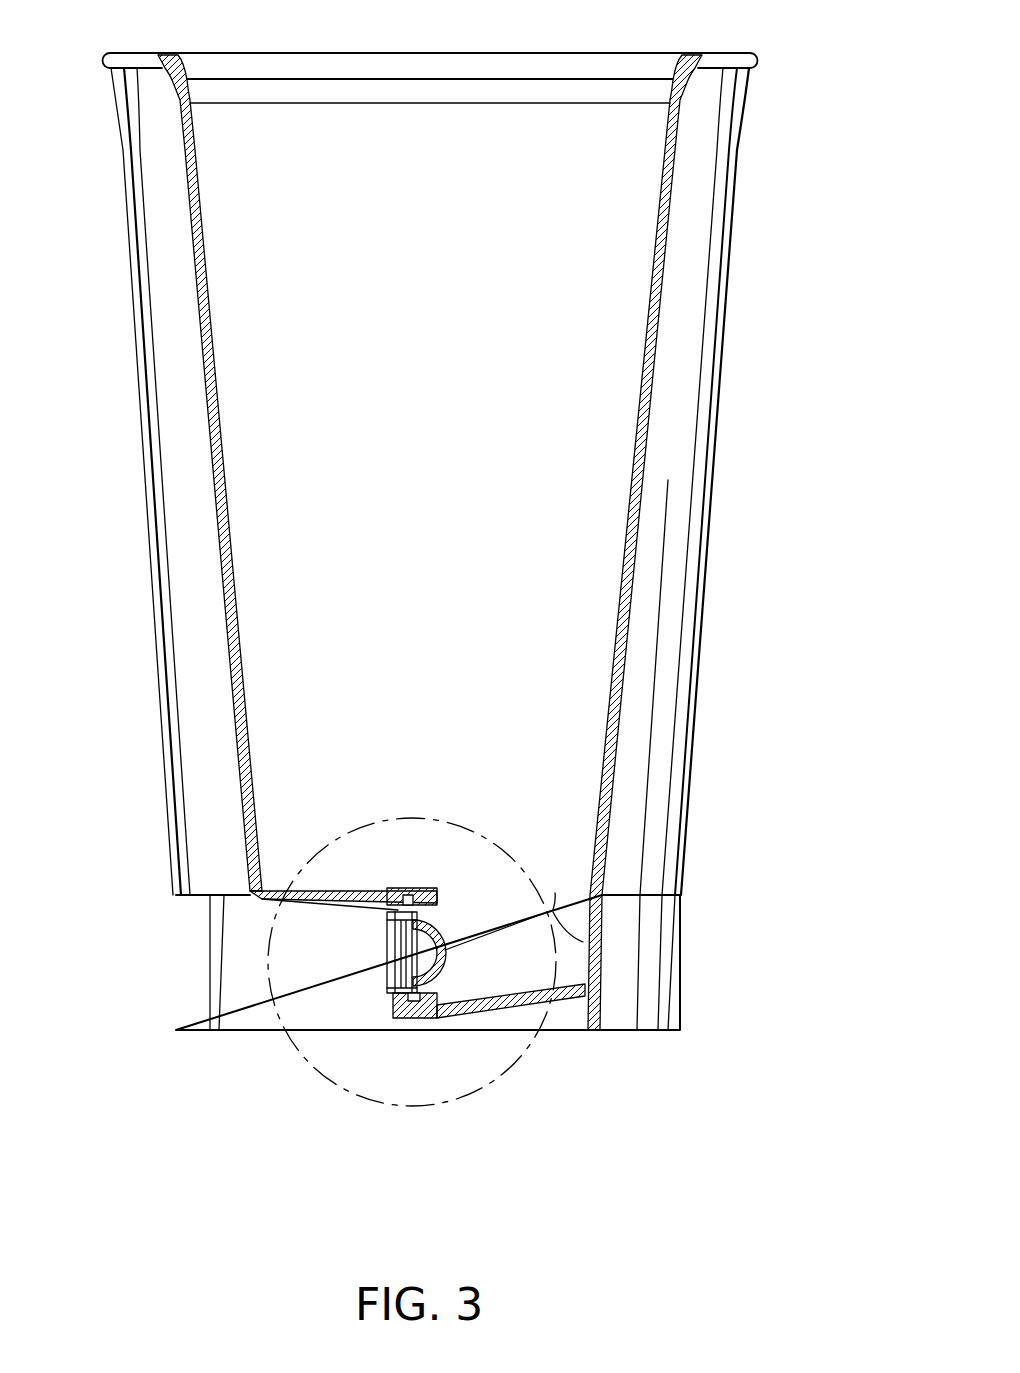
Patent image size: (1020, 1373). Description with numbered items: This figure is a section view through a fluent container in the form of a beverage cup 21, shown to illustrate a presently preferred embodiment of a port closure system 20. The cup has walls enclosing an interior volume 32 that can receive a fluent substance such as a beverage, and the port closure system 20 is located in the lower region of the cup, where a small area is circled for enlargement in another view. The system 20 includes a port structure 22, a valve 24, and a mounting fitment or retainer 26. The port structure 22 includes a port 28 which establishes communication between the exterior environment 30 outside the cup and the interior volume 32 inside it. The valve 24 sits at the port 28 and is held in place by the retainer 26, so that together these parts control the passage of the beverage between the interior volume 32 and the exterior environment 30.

The interior volume 32 is at (423, 214).
The beverage cup 21 is at (690, 603).
The exterior environment 30 is at (128, 998).
The port closure system 20 is at (379, 961).
The port structure 22 is at (404, 907).
The port 28 is at (444, 918).
The valve 24 is at (455, 985).
The mounting fitment or retainer 26 is at (384, 993).